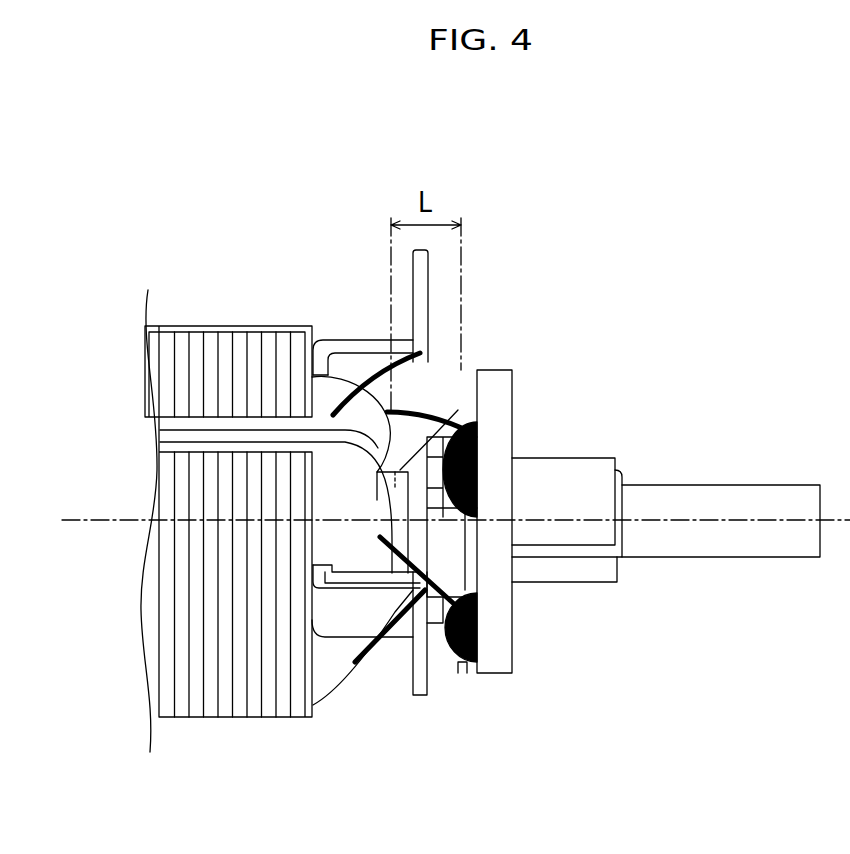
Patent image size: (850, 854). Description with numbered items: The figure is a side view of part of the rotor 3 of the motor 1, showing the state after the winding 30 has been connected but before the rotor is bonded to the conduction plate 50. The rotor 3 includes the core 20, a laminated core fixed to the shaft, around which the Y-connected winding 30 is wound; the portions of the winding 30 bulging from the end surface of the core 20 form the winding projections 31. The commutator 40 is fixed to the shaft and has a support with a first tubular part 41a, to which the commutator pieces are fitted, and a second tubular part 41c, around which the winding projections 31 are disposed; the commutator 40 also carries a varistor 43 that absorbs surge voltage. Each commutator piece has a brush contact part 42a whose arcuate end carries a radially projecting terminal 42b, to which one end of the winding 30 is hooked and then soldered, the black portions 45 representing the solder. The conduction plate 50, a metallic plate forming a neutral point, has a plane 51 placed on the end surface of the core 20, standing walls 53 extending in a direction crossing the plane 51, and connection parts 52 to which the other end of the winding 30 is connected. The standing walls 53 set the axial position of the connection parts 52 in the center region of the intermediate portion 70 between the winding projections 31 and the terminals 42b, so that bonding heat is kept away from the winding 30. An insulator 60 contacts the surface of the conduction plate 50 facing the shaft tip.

The motor 1 is at (784, 477).
The rotor 3 is at (741, 308).
The core 20 is at (236, 728).
The winding 30 is at (171, 437).
The winding projection 31 is at (385, 538).
The commutator 40 is at (593, 445).
The first tubular part 41a is at (570, 553).
The second tubular part 41c is at (458, 410).
The brush contact part 42a is at (553, 572).
The terminal 42b is at (462, 673).
The varistor 43 is at (511, 660).
The solder 45 is at (478, 440).
The conduction plate 50 is at (335, 327).
The plane 51 is at (312, 373).
The connection part 52 is at (413, 262).
The standing wall 53 is at (353, 340).
The insulator 60 is at (365, 572).
The intermediate portion 70 is at (440, 402).